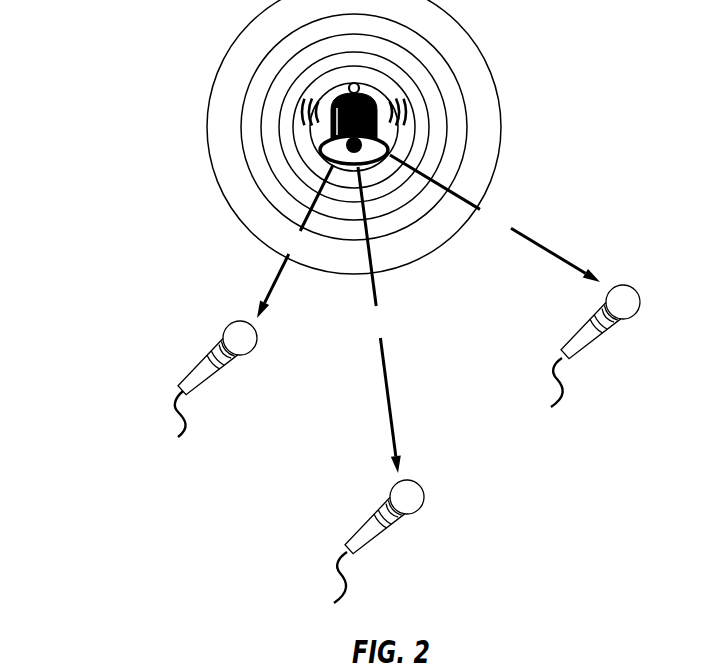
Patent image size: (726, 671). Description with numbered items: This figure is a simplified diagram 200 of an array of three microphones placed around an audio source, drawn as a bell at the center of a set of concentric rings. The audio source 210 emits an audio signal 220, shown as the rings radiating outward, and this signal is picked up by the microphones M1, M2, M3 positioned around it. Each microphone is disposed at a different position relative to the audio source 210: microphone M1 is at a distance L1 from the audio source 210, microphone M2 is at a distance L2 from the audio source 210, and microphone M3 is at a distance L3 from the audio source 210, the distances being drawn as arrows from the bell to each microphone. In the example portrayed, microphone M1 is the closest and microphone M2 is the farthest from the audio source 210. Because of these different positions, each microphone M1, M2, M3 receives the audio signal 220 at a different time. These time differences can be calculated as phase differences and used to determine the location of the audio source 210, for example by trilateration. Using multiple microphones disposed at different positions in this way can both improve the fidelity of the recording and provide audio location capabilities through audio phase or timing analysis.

The simplified diagram 200 is at (136, 22).
The audio source 210 is at (369, 95).
The audio signal 220 is at (502, 130).
The distance L1 is at (295, 241).
The distance L2 is at (379, 320).
The distance L3 is at (495, 218).
The microphone M1 is at (217, 375).
The microphone M2 is at (382, 538).
The microphone M3 is at (599, 342).